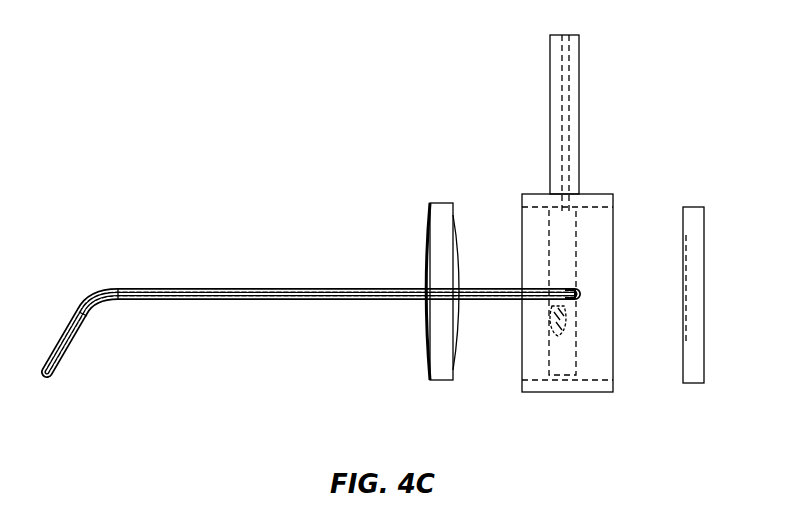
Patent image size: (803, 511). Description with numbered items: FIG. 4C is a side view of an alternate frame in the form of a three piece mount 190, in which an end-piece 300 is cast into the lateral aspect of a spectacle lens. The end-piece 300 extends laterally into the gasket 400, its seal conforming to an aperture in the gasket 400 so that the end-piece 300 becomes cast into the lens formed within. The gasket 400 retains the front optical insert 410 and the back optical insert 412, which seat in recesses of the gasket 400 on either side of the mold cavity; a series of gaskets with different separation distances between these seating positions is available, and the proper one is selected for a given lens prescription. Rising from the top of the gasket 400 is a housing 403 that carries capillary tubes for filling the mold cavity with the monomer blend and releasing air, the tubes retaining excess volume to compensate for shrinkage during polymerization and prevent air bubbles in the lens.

The three piece mount 190 is at (341, 91).
The end-piece 300 is at (249, 286).
The back optical insert 412 is at (440, 381).
The gasket 400 is at (565, 393).
The housing 403 is at (580, 82).
The front optical insert 410 is at (695, 207).